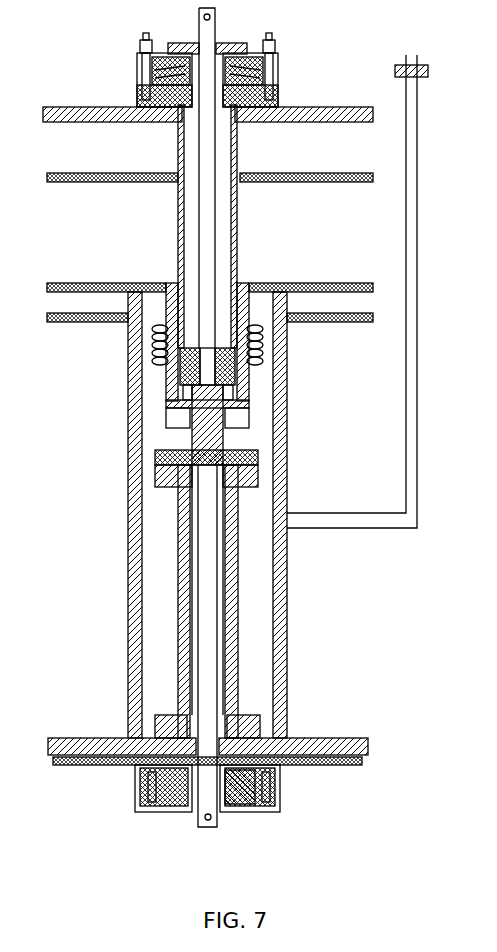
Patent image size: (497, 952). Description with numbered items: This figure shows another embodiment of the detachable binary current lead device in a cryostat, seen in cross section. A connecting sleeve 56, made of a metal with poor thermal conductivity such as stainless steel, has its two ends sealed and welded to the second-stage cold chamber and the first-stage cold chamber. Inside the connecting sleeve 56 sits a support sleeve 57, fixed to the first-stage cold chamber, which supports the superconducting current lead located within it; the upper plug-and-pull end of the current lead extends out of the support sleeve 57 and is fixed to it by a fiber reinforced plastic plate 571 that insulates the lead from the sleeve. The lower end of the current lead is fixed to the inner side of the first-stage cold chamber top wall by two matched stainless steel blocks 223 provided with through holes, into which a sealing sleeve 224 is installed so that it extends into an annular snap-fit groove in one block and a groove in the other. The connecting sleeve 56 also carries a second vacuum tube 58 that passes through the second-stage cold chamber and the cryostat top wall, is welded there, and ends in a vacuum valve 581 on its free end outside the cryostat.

The connecting sleeve 56 is at (141, 673).
The support sleeve 57 is at (178, 600).
The fiber reinforced plastic plate 571 is at (153, 450).
The second vacuum tube 58 is at (405, 278).
The vacuum valve 581 is at (398, 70).
The stainless steel block 223 is at (177, 806).
The sealing sleeve 224 is at (237, 790).